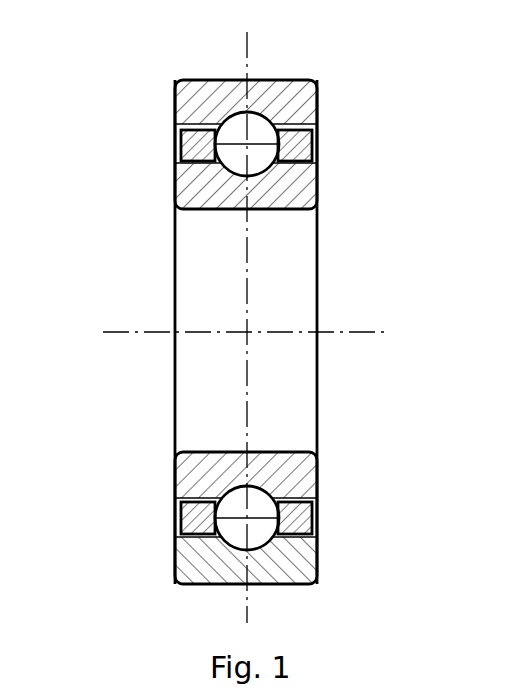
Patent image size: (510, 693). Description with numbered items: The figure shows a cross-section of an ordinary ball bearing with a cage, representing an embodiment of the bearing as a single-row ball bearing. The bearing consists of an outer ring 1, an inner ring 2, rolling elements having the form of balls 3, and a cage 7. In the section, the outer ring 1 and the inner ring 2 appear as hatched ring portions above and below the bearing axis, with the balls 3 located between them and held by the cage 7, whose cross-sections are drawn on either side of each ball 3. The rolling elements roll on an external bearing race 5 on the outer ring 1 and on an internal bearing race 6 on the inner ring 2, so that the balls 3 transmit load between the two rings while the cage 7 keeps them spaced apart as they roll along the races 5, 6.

The outer ring 1 is at (318, 90).
The inner ring 2 is at (308, 188).
The balls 3 is at (257, 497).
The external bearing race 5 is at (240, 109).
The internal bearing race 6 is at (230, 176).
The cage 7 is at (312, 518).